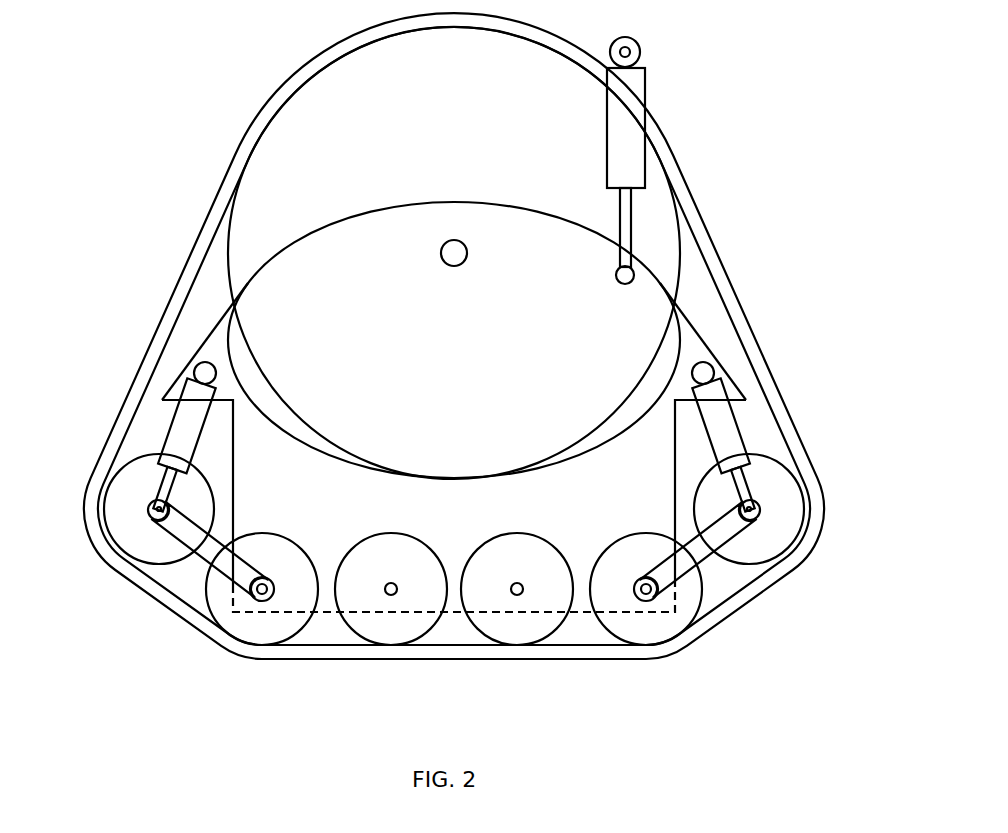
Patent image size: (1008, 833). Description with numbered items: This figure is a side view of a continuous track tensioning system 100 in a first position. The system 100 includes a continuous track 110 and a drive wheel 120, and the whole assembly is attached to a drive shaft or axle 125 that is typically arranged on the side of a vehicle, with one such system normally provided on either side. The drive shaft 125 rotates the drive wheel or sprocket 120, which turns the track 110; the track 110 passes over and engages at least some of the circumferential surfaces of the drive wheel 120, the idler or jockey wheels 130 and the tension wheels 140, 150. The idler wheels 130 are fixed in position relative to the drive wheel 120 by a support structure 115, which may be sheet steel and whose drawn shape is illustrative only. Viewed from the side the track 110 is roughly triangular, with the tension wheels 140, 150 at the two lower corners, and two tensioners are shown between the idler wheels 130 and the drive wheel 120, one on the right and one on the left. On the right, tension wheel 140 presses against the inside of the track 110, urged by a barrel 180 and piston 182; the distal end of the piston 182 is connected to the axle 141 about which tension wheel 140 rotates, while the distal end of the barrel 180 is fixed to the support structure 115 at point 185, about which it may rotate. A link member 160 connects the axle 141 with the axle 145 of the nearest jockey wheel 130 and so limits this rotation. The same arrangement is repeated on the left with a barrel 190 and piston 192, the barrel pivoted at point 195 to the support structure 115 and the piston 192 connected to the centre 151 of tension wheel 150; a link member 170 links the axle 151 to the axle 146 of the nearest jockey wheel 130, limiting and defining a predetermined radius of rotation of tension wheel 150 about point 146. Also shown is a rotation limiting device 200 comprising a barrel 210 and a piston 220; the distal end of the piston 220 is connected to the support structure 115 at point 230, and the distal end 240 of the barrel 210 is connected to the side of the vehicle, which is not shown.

The continuous track tensioning system 100 is at (774, 137).
The continuous track 110 is at (766, 390).
The support structure 115 is at (632, 503).
The drive wheel 120 is at (454, 253).
The drive shaft 125 is at (456, 266).
The idler wheels 130 is at (385, 630).
The tension wheel 140 is at (770, 533).
The axle 141 is at (760, 512).
The axle 145 is at (652, 603).
The axle 146 is at (254, 600).
The tension wheel 150 is at (118, 514).
The centre 151 is at (148, 513).
The link member 160 is at (700, 552).
The link member 170 is at (208, 553).
The barrel 180 is at (728, 440).
The piston 182 is at (746, 490).
The point 185 is at (713, 371).
The barrel 190 is at (182, 433).
The piston 192 is at (165, 492).
The point 195 is at (194, 370).
The rotation limiting device 200 is at (672, 92).
The barrel 210 is at (633, 157).
The piston 220 is at (634, 228).
The point 230 is at (636, 273).
The distal end 240 is at (637, 43).